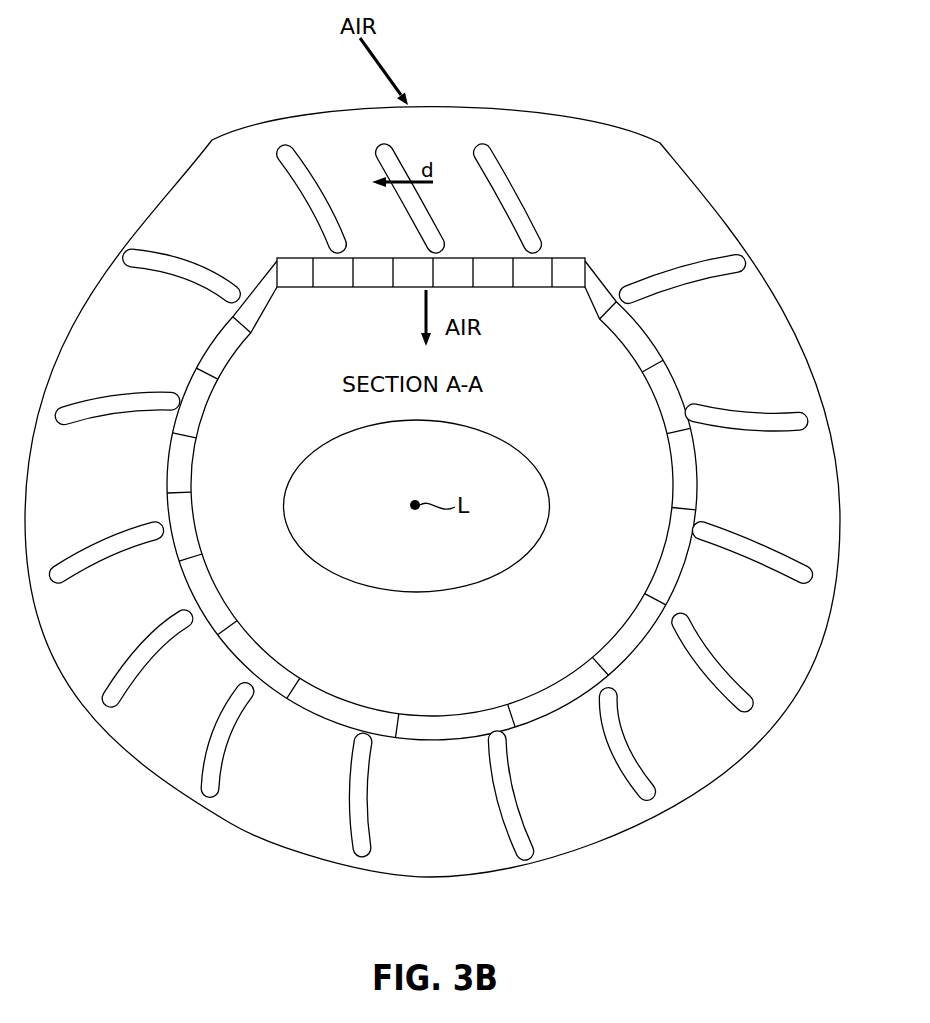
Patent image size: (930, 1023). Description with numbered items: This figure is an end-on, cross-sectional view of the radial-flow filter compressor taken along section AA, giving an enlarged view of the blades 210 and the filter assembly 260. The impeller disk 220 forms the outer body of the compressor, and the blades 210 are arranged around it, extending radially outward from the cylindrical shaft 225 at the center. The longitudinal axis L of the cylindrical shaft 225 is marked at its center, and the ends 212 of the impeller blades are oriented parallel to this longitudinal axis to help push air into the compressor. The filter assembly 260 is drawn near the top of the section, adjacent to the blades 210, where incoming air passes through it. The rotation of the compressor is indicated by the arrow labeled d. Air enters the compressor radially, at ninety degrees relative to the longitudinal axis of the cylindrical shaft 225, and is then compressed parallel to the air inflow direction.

The blades 210 is at (482, 150).
The ends 212 is at (283, 146).
The impeller disk 220 is at (762, 322).
The cylindrical shaft 225 is at (368, 567).
The filter assembly 260 is at (567, 266).